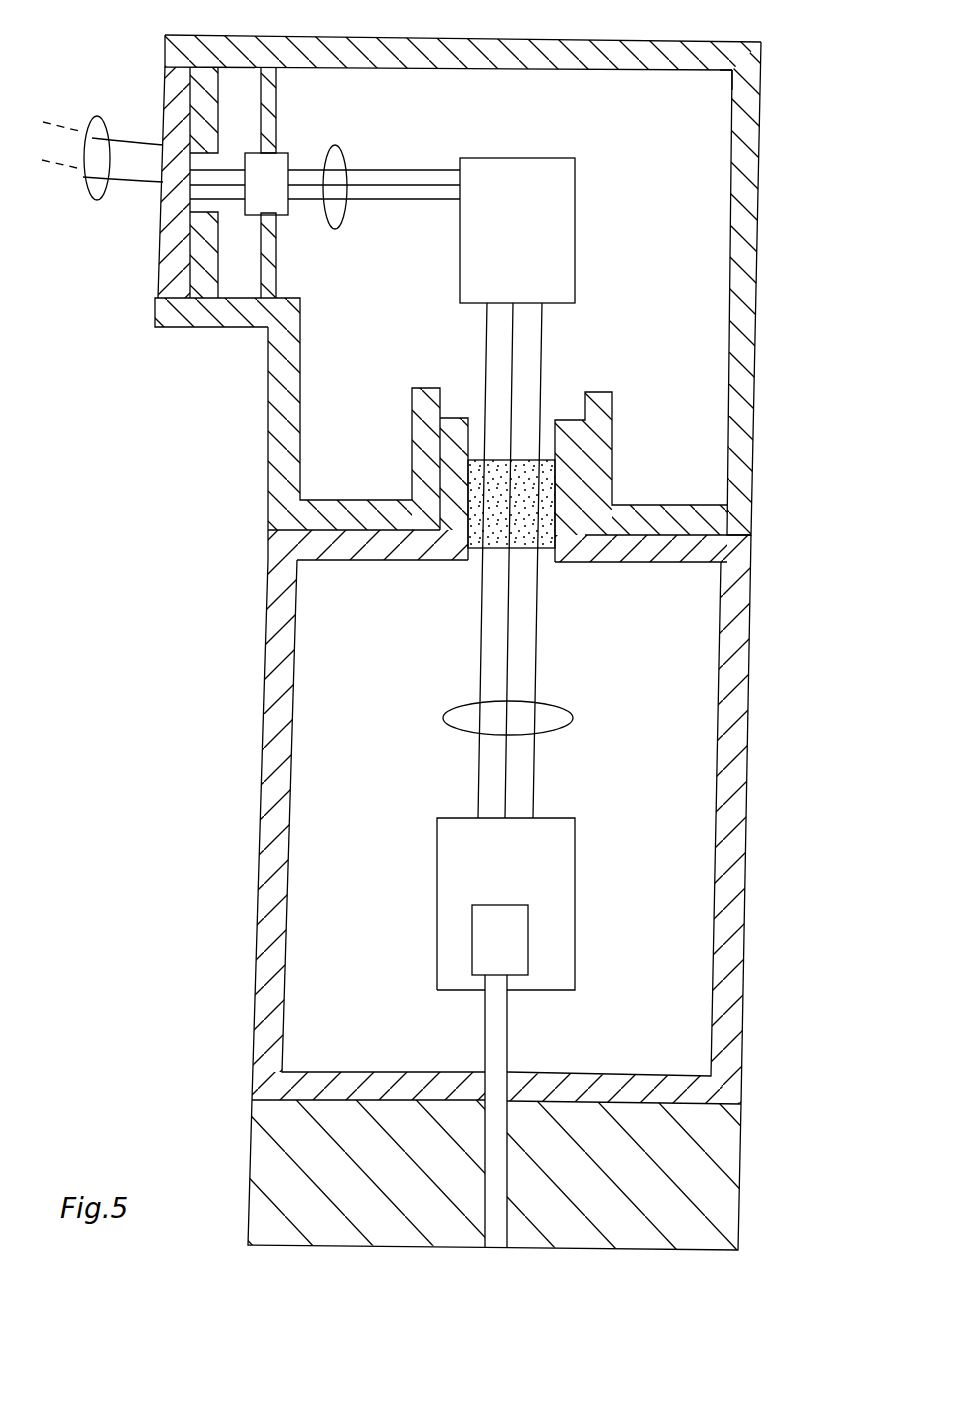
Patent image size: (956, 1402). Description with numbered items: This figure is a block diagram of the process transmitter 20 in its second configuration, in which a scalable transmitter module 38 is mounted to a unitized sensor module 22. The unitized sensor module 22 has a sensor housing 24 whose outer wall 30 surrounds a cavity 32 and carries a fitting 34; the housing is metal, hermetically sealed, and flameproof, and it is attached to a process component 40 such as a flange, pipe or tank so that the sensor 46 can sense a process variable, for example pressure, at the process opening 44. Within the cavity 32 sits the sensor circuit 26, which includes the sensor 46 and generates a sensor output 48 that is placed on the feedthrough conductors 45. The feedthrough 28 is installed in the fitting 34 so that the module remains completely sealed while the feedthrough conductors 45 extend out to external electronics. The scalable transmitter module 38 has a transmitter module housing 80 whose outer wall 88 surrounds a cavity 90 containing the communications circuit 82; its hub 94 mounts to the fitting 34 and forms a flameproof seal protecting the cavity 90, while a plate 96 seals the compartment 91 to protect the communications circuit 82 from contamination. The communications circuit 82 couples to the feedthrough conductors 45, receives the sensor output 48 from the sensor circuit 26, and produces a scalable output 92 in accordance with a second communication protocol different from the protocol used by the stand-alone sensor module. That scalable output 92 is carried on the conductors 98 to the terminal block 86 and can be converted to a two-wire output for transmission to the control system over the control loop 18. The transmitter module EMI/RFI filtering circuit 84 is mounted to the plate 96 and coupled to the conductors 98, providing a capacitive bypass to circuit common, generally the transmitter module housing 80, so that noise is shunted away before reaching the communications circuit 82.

The control loop 18 is at (85, 197).
The process transmitter 20 is at (499, 273).
The unitized sensor module 22 is at (530, 817).
The sensor housing 24 is at (738, 776).
The sensor circuit 26 is at (563, 845).
The feedthrough 28 is at (543, 503).
The outer wall 30 is at (745, 955).
The cavity 32 is at (700, 590).
The fitting 34 is at (568, 457).
The scalable transmitter module 38 is at (755, 285).
The process component 40 is at (728, 1133).
The process opening 44 is at (490, 1250).
The feedthrough conductors 45 is at (572, 718).
The sensor 46 is at (472, 933).
The sensor output 48 is at (537, 616).
The transmitter module housing 80 is at (280, 458).
The communications circuit 82 is at (570, 190).
The transmitter module EMI/RFI filtering circuit 84 is at (283, 153).
The terminal block 86 is at (165, 79).
The outer wall 88 is at (270, 403).
The cavity 90 is at (703, 90).
The compartment 91 is at (726, 80).
The scalable output 92 is at (393, 170).
The hub 94 is at (425, 406).
The plate 96 is at (259, 70).
The conductors 98 is at (337, 150).